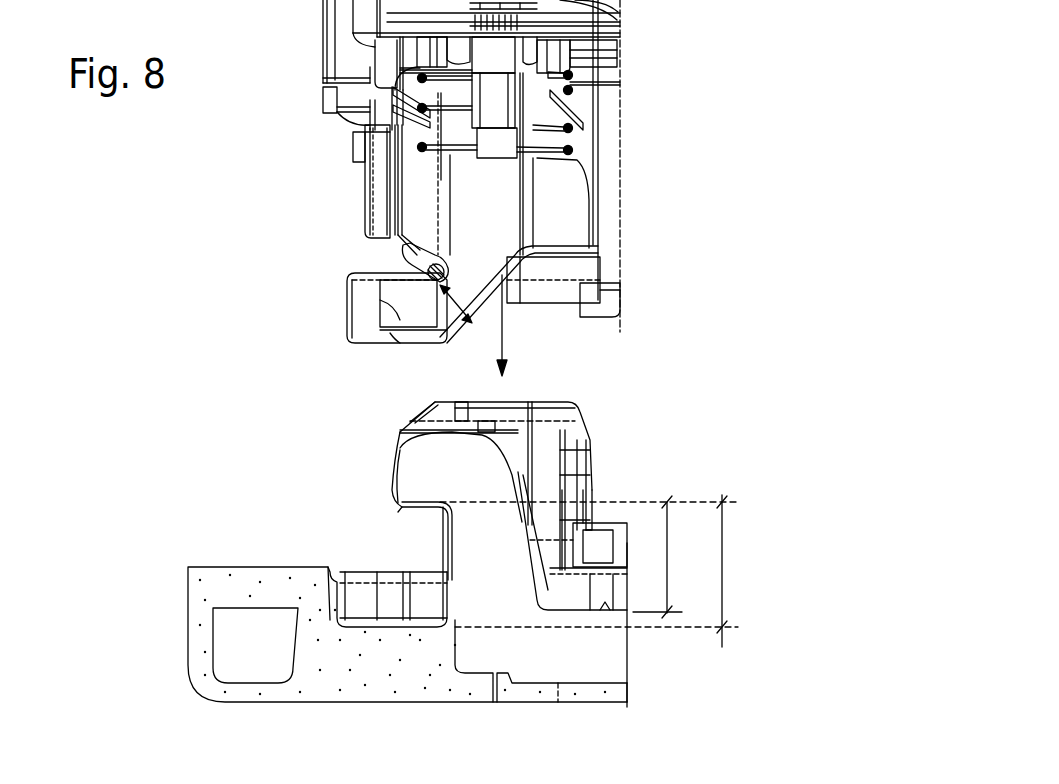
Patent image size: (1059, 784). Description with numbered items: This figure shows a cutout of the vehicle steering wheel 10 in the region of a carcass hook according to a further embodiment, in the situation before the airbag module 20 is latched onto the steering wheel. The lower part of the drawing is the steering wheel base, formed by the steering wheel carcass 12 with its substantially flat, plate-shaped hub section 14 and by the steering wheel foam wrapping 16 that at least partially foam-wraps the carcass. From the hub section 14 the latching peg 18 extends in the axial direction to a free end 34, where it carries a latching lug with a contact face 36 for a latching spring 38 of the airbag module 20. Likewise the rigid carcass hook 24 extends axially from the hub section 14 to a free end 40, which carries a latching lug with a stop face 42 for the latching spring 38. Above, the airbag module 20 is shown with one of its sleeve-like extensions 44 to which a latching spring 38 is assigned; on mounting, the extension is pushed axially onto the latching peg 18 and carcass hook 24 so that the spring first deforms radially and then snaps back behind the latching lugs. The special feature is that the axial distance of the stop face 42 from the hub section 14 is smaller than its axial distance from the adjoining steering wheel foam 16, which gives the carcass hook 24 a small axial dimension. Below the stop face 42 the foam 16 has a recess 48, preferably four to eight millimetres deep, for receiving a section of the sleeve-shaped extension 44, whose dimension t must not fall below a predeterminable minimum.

The vehicle steering wheel 10 is at (181, 521).
The steering wheel carcass 12 is at (233, 642).
The hub section 14 is at (638, 686).
The steering wheel foam wrapping 16 is at (342, 680).
The latching peg 18 is at (548, 468).
The airbag module 20 is at (648, 137).
The carcass hook 24 is at (490, 553).
The free end 34 is at (573, 388).
The contact face 36 is at (398, 512).
The latching spring 38 is at (437, 272).
The free end 40 is at (464, 421).
The stop face 42 is at (408, 462).
The sleeve-like extension 44 is at (390, 195).
The recess 48 is at (351, 585).